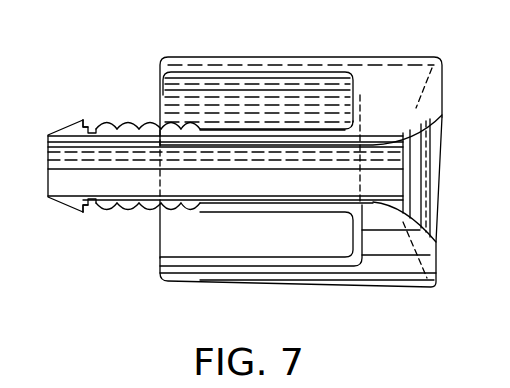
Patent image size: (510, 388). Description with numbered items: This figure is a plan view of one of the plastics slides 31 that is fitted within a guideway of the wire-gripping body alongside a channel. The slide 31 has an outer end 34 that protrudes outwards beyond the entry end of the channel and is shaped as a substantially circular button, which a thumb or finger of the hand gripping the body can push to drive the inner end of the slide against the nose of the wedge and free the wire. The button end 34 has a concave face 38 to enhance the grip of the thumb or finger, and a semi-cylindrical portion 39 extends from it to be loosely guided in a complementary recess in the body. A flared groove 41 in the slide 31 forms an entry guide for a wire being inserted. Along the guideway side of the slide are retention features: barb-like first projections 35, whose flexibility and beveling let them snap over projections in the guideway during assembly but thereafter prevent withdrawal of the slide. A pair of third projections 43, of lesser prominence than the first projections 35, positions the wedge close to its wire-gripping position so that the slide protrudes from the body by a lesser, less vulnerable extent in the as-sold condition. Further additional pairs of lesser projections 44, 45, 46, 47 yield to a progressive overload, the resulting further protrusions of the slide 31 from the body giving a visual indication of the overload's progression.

The slide 31 is at (297, 133).
The outer end 34 is at (392, 117).
The first projection 35 is at (83, 120).
The concave face 38 is at (403, 185).
The semi-cylindrical portion 39 is at (320, 283).
The flared groove 41 is at (337, 160).
The third projection 43 is at (193, 126).
The lesser projection 44 is at (173, 126).
The lesser projection 45 is at (151, 126).
The lesser projection 46 is at (126, 126).
The lesser projection 47 is at (107, 123).